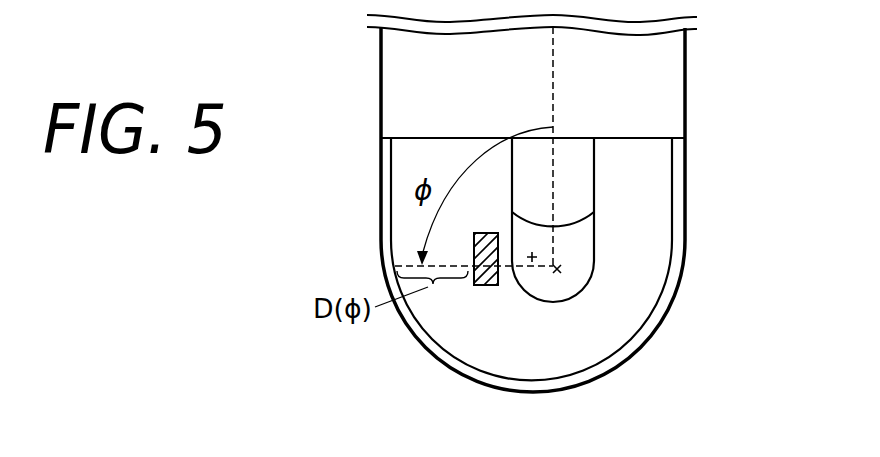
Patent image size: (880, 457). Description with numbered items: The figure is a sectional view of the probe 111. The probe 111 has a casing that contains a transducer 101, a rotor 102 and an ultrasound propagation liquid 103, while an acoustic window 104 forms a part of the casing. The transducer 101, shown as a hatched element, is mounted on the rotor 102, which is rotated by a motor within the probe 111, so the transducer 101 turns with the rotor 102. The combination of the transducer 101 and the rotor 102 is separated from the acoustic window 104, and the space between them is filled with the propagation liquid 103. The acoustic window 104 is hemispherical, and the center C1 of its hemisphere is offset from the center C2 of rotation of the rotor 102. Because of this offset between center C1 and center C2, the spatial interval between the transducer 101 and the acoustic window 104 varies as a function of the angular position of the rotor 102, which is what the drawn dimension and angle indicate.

The transducer 101 is at (490, 284).
The rotor 102 is at (597, 285).
The ultrasound propagation medium or liquid 103 is at (492, 345).
The acoustic window 104 is at (612, 368).
The probe 111 is at (749, 94).
The center of the hemisphere of the acoustic window C1 is at (546, 248).
The center of rotation of the rotor C2 is at (570, 260).